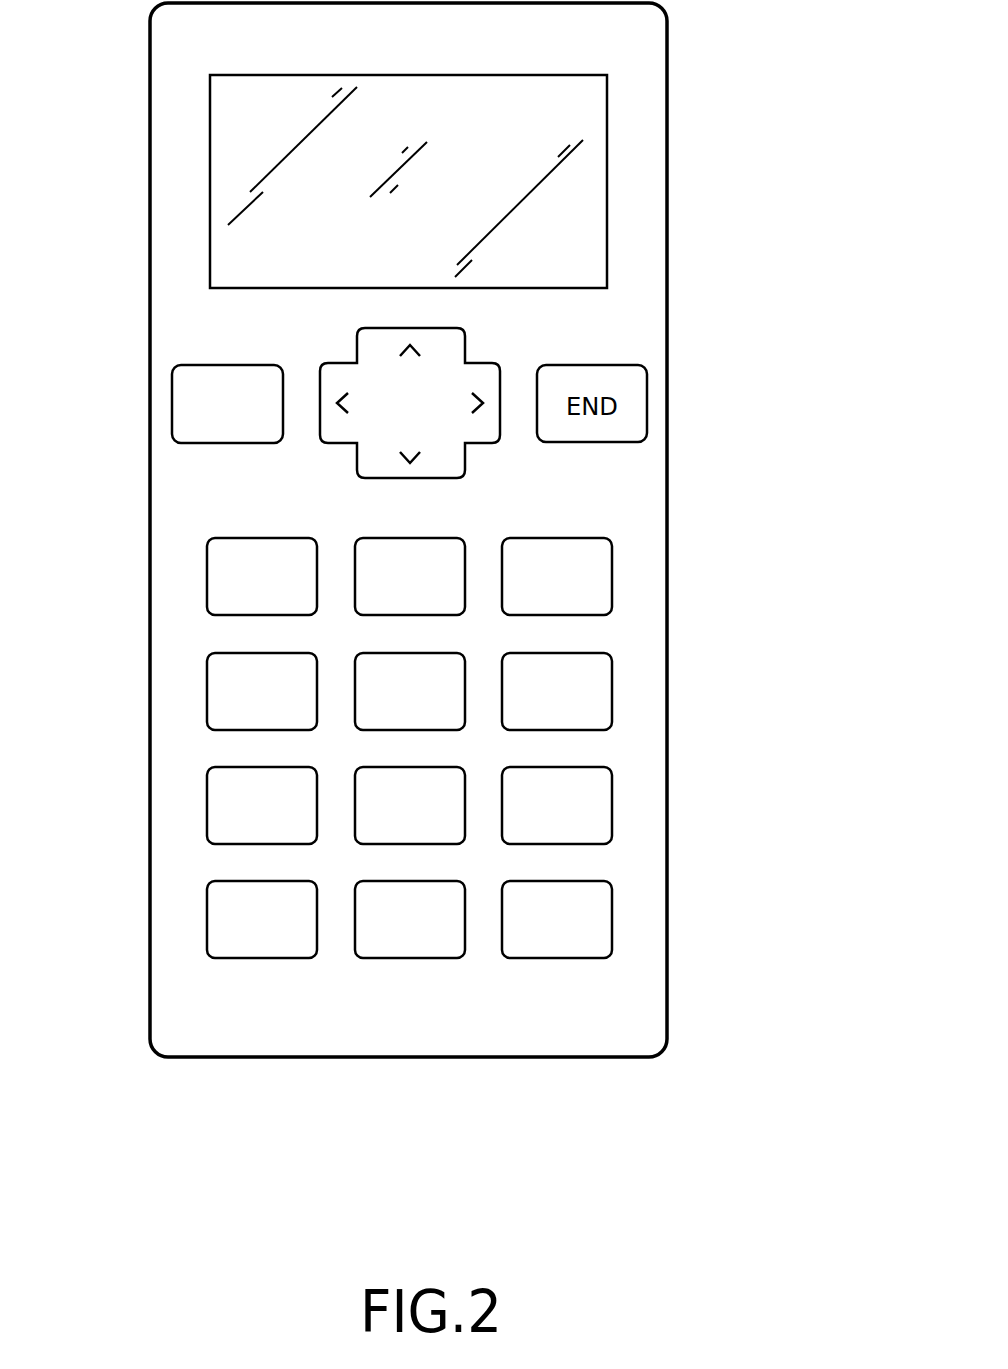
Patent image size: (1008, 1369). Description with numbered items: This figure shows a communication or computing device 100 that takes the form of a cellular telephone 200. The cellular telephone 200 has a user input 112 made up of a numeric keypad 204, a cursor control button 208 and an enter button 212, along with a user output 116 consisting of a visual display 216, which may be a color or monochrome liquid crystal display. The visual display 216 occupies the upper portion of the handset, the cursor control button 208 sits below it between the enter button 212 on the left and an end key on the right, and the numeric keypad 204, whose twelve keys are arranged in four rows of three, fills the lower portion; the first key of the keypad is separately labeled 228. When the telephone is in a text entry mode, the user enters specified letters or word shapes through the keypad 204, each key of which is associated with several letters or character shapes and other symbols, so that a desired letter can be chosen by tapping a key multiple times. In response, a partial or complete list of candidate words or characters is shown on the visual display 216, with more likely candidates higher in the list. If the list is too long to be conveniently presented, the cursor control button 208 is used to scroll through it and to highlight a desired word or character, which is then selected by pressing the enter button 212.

The communication or computing device 100 is at (496, 530).
The cellular telephone 200 is at (667, 52).
The user output 116 is at (510, 181).
The visual display 216 is at (591, 182).
The cursor control button 208 is at (450, 351).
The enter button 212 is at (172, 388).
The key 1 228 is at (222, 562).
The numeric keypad 204 is at (442, 749).
The user input 112 is at (442, 836).